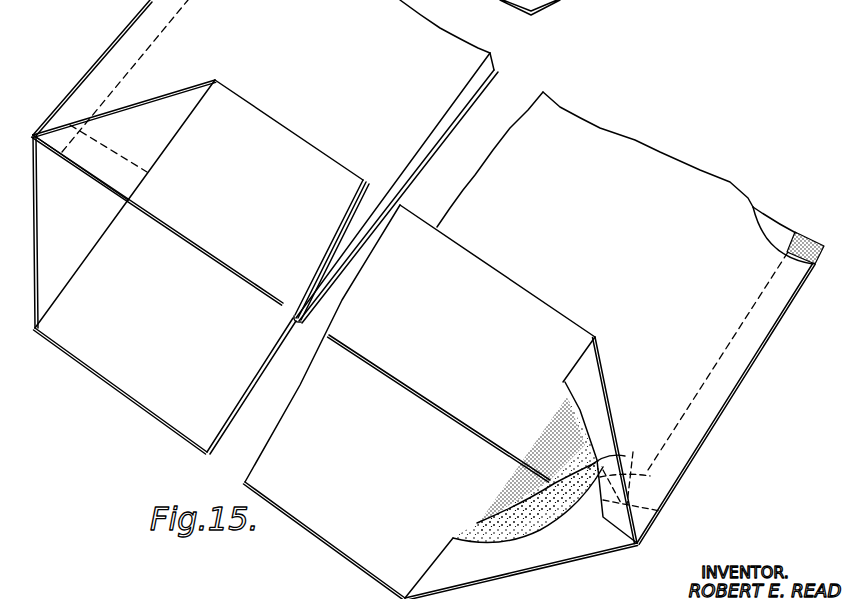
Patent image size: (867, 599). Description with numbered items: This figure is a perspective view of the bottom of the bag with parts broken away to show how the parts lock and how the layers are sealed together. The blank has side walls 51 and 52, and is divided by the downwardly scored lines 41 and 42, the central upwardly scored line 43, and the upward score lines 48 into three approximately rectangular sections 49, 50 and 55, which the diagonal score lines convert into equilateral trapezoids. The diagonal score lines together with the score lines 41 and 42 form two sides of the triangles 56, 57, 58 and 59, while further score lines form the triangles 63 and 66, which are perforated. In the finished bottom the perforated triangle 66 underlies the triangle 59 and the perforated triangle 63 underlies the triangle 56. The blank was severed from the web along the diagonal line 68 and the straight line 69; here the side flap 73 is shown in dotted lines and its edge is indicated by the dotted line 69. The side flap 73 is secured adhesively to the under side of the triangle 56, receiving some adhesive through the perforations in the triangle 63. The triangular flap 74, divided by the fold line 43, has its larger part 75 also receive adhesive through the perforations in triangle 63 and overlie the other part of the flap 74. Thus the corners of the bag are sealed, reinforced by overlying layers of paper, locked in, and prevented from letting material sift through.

The downwardly scored line 41 is at (300, 140).
The downwardly scored line 42 is at (127, 392).
The upwardly scored line 43 is at (210, 257).
The upward score line 48 is at (288, 308).
The rectangular section 49 is at (292, 450).
The rectangular section 50 is at (361, 281).
The side wall 51 is at (423, 271).
The side wall 52 is at (463, 110).
The rectangular section 55 is at (150, 100).
The triangle 56 is at (588, 389).
The triangle 57 is at (150, 137).
The triangle 58 is at (87, 226).
The triangle 59 is at (508, 565).
The perforated triangle 63 is at (586, 427).
The perforated triangle 66 is at (495, 525).
The diagonal line 68 is at (660, 511).
The straight line 69 is at (637, 486).
The side flap 73 is at (812, 232).
The triangular flap 74 is at (619, 456).
The part of triangular flap 75 is at (573, 491).